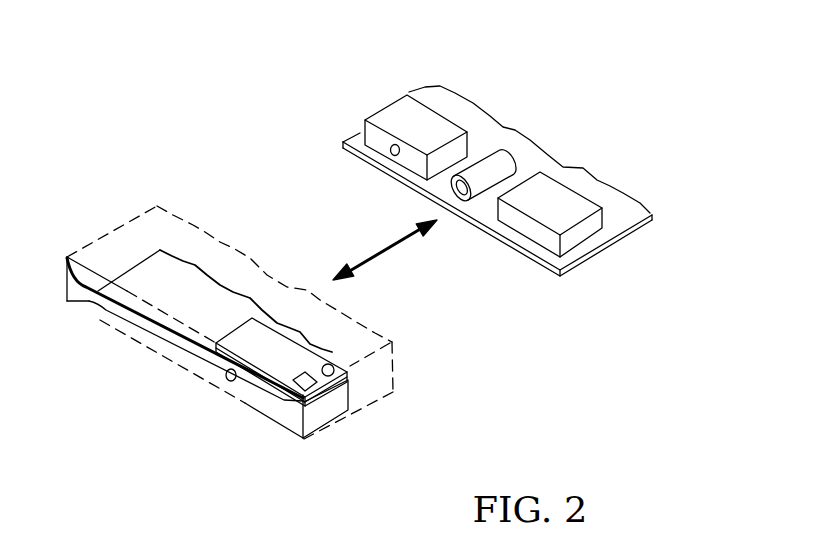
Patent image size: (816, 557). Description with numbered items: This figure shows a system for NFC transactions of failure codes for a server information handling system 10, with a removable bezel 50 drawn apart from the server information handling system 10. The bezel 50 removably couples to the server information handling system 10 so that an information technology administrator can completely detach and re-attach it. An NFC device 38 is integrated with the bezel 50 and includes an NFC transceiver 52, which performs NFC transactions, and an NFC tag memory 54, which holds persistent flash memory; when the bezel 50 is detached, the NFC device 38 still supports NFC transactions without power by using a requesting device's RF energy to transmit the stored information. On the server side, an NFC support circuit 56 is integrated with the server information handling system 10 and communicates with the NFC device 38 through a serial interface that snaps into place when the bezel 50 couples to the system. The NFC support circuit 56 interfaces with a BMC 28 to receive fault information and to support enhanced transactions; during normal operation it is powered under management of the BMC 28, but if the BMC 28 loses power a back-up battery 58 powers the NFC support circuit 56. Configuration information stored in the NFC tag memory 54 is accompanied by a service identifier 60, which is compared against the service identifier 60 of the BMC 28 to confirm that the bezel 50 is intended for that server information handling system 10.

The server information handling system 10 is at (634, 190).
The BMC 28 is at (387, 108).
The back-up battery 58 is at (482, 170).
The service identifier 60 is at (440, 367).
The NFC support circuit 56 is at (580, 232).
The bezel 50 is at (135, 321).
The NFC transceiver 52 is at (226, 376).
The NFC tag memory 54 is at (340, 383).
The NFC device 38 is at (282, 396).